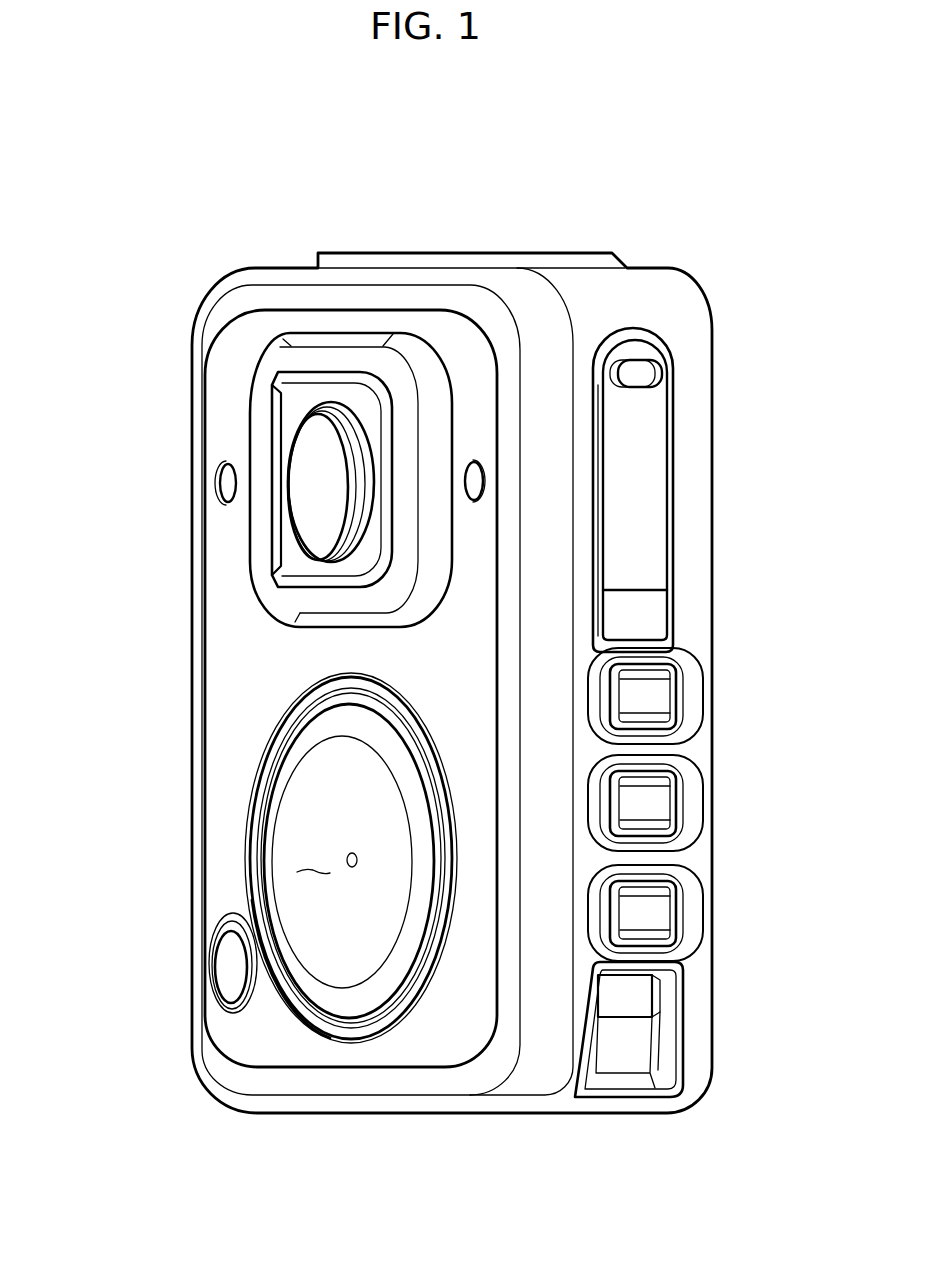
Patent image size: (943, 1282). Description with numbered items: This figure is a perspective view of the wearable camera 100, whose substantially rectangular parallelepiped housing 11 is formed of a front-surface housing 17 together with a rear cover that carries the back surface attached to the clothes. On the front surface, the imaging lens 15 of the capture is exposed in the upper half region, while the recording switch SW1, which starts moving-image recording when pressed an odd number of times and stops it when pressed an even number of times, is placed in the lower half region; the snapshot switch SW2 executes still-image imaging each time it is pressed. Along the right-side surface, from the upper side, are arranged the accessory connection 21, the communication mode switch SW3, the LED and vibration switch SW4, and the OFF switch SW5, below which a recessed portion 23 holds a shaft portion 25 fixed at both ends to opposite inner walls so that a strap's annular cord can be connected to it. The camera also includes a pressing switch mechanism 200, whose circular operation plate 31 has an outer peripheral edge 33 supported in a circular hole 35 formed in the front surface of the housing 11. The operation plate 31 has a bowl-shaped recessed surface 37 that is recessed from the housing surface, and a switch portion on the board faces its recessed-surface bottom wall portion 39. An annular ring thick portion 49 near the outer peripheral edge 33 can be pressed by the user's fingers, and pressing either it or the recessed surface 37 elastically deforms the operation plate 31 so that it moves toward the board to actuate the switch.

The wearable camera 100 is at (216, 216).
The housing 11 is at (676, 250).
The front-surface housing 17 is at (683, 300).
The imaging lens 15 is at (305, 445).
The pressing switch mechanism 200 is at (415, 695).
The accessory connection 21 is at (652, 448).
The recessed portion 23 is at (643, 998).
The shaft portion 25 is at (632, 1065).
The operation plate 31 is at (297, 797).
The outer peripheral edge 33 is at (300, 1002).
The circular hole 35 is at (282, 773).
The recessed surface 37 is at (313, 875).
The recessed-surface bottom wall portion 39 is at (357, 860).
The ring thick portion 49 is at (323, 720).
The recording switch SW1 is at (240, 870).
The snapshot switch SW2 is at (228, 967).
The communication mode switch SW3 is at (660, 700).
The LED and vibration switch SW4 is at (660, 803).
The OFF switch SW5 is at (653, 913).